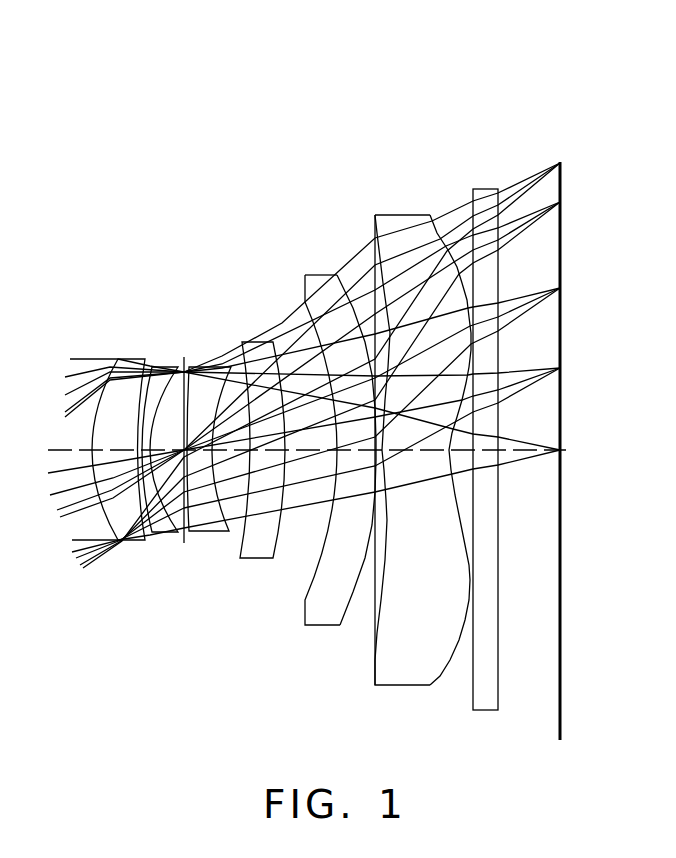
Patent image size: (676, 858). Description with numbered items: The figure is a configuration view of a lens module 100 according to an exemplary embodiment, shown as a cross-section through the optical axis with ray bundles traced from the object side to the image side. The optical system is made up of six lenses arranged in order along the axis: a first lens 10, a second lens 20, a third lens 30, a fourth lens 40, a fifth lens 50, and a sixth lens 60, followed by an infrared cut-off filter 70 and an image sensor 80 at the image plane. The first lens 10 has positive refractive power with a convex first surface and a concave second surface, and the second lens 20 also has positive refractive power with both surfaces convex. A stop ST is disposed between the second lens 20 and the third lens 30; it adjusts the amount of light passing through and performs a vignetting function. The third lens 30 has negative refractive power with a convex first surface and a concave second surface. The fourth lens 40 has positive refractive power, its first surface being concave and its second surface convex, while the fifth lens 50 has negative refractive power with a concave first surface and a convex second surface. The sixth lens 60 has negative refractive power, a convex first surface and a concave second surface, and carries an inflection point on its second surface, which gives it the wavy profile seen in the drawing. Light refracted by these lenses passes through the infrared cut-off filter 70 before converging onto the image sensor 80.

The lens module 100 is at (242, 126).
The first lens 10 is at (137, 362).
The second lens 20 is at (168, 365).
The third lens 30 is at (213, 364).
The fourth lens 40 is at (258, 340).
The fifth lens 50 is at (323, 272).
The sixth lens 60 is at (401, 214).
The infrared cut-off filter 70 is at (490, 188).
The image sensor 80 is at (562, 233).
The stop ST is at (183, 545).